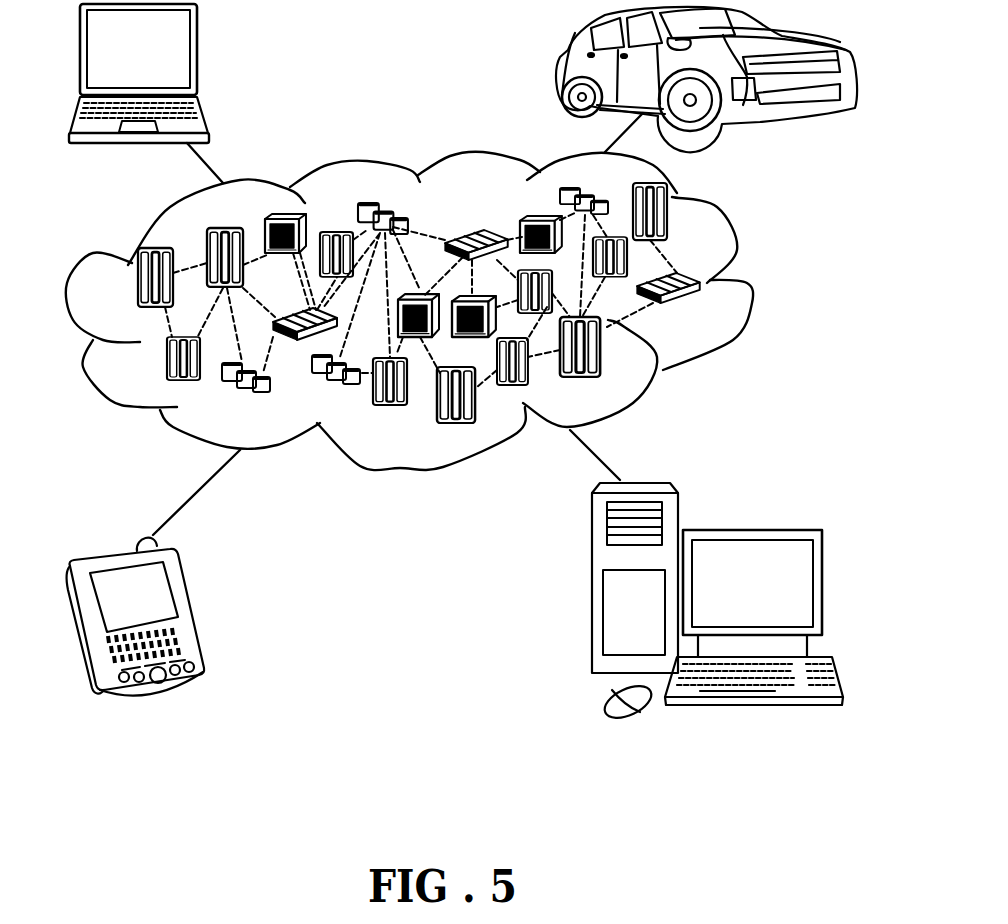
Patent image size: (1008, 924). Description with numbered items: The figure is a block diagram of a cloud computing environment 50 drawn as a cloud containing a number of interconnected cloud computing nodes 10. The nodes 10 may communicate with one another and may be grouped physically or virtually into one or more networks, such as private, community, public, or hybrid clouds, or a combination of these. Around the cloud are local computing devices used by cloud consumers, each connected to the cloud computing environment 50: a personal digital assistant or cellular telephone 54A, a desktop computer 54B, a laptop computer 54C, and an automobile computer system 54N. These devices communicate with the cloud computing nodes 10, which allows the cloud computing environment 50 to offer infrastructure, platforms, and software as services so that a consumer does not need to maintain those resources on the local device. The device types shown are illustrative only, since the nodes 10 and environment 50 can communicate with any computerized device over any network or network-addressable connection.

The cloud computing node 10 is at (703, 312).
The cloud computing environment 50 is at (750, 289).
The personal digital assistant or cellular telephone 54A is at (188, 608).
The desktop computer 54B is at (750, 530).
The laptop computer 54C is at (198, 58).
The automobile computer system 54N is at (565, 72).